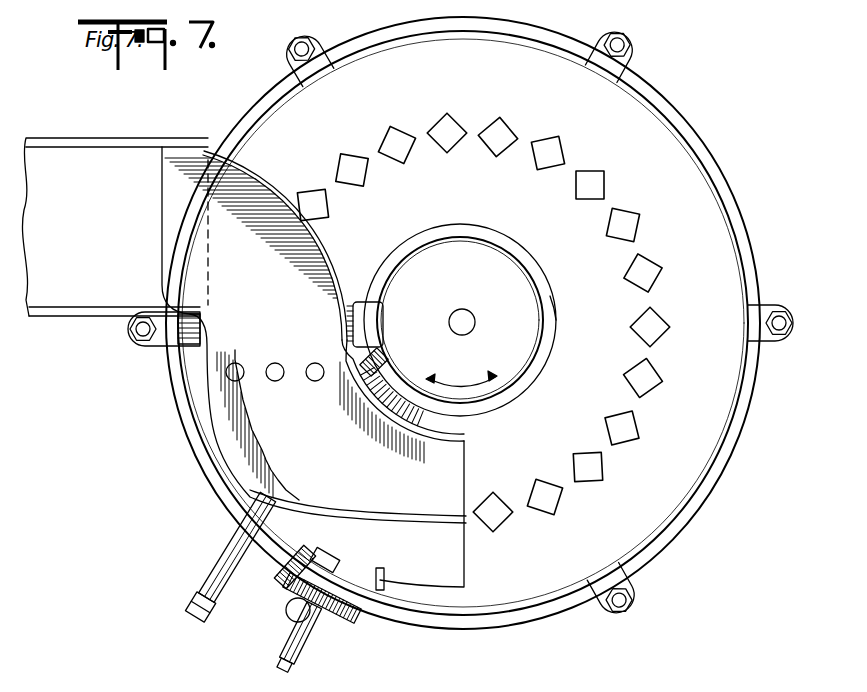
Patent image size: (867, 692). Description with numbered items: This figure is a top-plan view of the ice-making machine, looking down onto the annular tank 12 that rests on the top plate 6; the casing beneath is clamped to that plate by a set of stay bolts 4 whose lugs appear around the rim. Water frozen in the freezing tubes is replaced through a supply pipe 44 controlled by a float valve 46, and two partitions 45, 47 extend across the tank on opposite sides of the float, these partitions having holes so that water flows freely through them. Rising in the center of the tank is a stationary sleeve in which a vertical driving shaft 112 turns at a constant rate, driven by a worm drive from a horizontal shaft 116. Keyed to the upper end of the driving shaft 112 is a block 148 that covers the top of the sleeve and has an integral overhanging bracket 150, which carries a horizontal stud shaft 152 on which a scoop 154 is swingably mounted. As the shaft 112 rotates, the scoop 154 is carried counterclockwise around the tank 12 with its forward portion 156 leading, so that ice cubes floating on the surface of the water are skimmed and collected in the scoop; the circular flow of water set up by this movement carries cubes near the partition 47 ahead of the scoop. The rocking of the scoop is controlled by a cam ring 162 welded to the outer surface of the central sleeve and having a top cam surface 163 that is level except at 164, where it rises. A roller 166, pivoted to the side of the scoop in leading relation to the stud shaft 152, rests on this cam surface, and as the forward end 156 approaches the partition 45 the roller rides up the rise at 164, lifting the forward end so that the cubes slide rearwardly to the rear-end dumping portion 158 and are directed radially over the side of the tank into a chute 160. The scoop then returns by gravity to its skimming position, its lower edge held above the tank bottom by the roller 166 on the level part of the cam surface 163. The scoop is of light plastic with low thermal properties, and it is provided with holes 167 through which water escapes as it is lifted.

The stay bolts 4 is at (302, 44).
The top plate 6 is at (712, 165).
The annular tank 12 is at (722, 452).
The supply pipe 44 is at (292, 638).
The partition 45 is at (292, 542).
The float valve 46 is at (338, 562).
The partition 47 is at (385, 578).
The driving shaft 112 is at (463, 317).
The horizontal shaft 116 is at (195, 601).
The block 148 is at (508, 260).
The overhanging bracket 150 is at (360, 303).
The stud shaft 152 is at (180, 340).
The scoop 154 is at (278, 176).
The forward portion 156 is at (456, 488).
The rear-end dumping portion 158 is at (168, 222).
The chute 160 is at (60, 138).
The cam ring 162 is at (553, 352).
The cam surface 163 is at (551, 297).
The rise of cam surface 164 is at (410, 379).
The roller 166 is at (375, 349).
The holes 167 is at (300, 363).